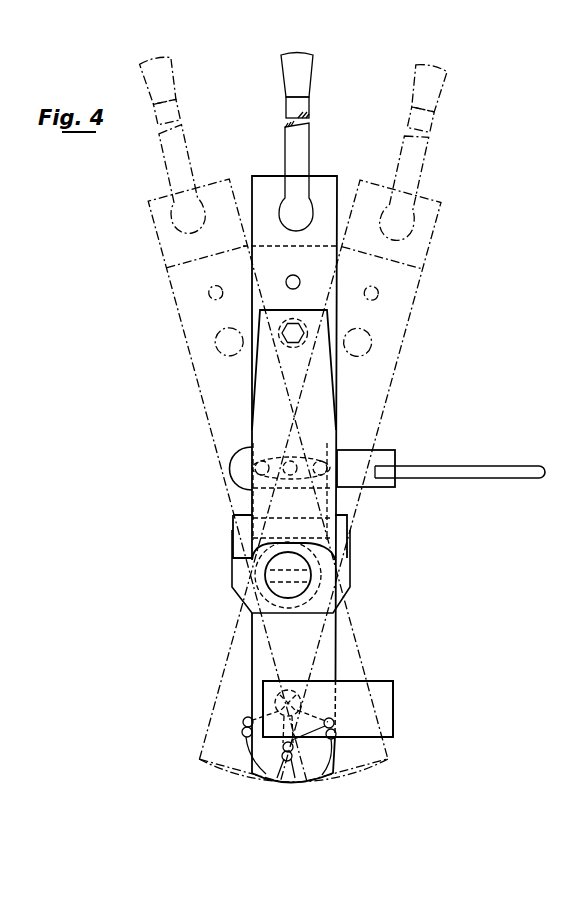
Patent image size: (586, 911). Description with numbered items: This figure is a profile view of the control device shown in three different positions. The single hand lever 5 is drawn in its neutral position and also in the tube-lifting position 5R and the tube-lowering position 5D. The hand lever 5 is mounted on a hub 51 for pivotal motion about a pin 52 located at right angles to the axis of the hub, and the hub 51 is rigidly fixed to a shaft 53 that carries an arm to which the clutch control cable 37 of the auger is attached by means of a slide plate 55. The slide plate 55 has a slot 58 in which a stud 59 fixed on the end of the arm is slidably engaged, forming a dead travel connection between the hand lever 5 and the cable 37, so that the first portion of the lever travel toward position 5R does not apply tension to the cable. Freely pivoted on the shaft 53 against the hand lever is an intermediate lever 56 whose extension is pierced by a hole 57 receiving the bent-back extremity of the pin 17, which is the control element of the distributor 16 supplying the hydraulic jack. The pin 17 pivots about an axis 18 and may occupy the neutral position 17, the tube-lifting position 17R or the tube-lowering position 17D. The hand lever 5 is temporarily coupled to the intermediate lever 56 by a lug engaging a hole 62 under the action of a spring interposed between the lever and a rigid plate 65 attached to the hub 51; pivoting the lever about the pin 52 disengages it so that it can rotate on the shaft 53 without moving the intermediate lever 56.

The hand lever 5 is at (307, 155).
The tube-lifting position of the hand lever 5R is at (165, 150).
The tube-lowering position of the hand lever 5D is at (345, 422).
The distributor 16 is at (383, 696).
The pin 17 is at (273, 772).
The tube-lowering position of the pin 17D is at (243, 720).
The tube-lifting position of the pin 17R is at (334, 734).
The axis 18 is at (277, 700).
The clutch control cable 37 is at (466, 468).
The hub 51 is at (350, 582).
The pin 52 is at (330, 527).
The shaft 53 is at (265, 574).
The slide plate 55 is at (383, 450).
The intermediate lever 56 is at (257, 632).
The hole 57 is at (243, 734).
The slot 58 is at (333, 443).
The stud 59 is at (230, 490).
The hole 62 is at (286, 283).
The rigid plate 65 is at (268, 387).